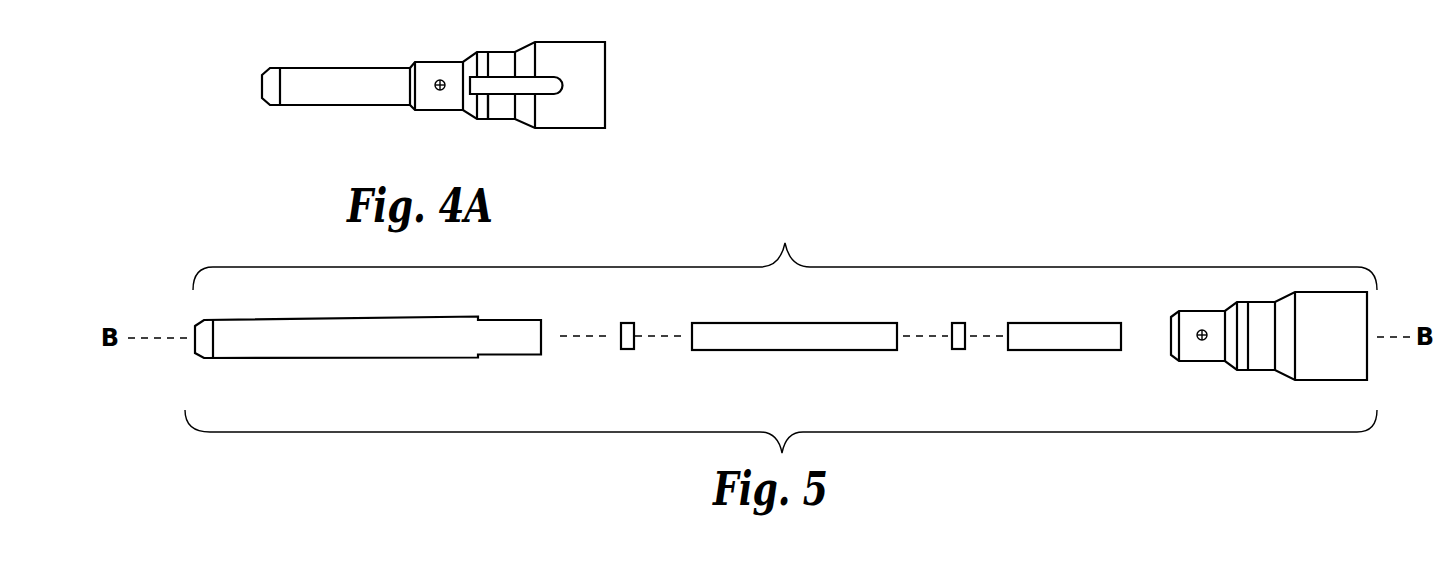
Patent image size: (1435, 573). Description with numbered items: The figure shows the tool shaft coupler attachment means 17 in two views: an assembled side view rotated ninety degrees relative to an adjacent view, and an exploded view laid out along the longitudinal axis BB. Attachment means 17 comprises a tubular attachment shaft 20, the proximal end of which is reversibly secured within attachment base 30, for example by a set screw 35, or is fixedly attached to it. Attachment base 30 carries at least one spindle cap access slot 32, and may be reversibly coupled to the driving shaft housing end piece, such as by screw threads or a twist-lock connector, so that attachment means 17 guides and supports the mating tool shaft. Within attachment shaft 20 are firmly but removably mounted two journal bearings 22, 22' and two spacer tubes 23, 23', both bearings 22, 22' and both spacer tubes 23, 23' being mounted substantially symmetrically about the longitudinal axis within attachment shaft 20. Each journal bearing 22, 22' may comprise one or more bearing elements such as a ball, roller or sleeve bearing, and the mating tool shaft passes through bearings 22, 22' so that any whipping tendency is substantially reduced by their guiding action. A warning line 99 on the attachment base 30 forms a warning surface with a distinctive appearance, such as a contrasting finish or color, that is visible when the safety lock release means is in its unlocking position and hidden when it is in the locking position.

In FIG. 5, the attachment means 17 is at (781, 331).
In FIG. 4A, the attachment shaft 20 is at (337, 107).
In FIG. 5, the attachment shaft 20 is at (347, 358).
In FIG. 5, the journal bearing 22 is at (608, 352).
In FIG. 5, the journal bearing 22' is at (939, 353).
In FIG. 5, the spacer tube 23 is at (794, 353).
In FIG. 5, the spacer tube 23' is at (1064, 353).
In FIG. 4A, the attachment base 30 is at (433, 113).
In FIG. 5, the attachment base 30 is at (1197, 365).
In FIG. 4A, the spindle cap access slot 32 is at (513, 85).
In FIG. 4A, the set screw 35 is at (441, 75).
In FIG. 5, the set screw 35 is at (1202, 327).
In FIG. 4A, the warning line 99 is at (490, 105).
In FIG. 5, the warning line 99 is at (1252, 357).